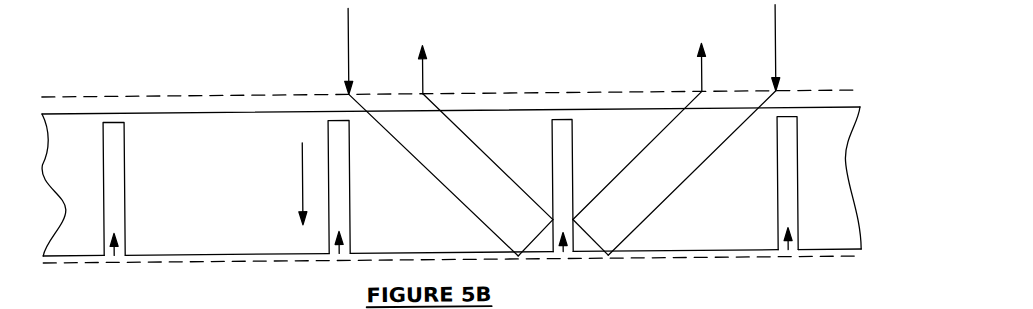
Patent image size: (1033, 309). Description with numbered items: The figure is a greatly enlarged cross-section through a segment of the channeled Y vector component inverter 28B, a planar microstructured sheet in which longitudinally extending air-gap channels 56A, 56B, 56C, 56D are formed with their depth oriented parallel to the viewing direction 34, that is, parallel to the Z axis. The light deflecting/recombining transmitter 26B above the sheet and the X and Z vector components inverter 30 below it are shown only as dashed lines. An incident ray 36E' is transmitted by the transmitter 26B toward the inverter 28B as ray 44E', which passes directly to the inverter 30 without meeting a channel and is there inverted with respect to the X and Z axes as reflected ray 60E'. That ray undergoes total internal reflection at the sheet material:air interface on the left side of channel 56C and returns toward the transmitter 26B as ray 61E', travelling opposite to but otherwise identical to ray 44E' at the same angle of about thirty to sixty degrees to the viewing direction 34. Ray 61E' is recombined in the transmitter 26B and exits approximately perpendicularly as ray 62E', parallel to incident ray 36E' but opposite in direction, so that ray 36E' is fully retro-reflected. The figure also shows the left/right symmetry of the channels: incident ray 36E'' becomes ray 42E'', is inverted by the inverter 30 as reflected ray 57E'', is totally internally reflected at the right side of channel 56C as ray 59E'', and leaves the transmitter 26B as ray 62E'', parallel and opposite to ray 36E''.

The light deflecting/recombining transmitter 26B is at (289, 97).
The channeled Y vector component inverter 28B is at (184, 229).
The X and Z vector components inverter 30 is at (727, 263).
The viewing direction 34 is at (302, 208).
The incident ray 36E' is at (383, 51).
The incident ray 36E'' is at (736, 48).
The ray 42E'' is at (692, 173).
The ray 44E' is at (433, 175).
The channel 56A is at (113, 257).
The channel 56B is at (338, 257).
The channel 56C is at (562, 257).
The channel 56D is at (786, 257).
The reflected ray 57E'' is at (613, 227).
The ray 59E'' is at (637, 155).
The reflected ray 60E' is at (517, 228).
The ray 61E' is at (488, 157).
The ray 62E' is at (469, 69).
The ray 62E'' is at (649, 67).